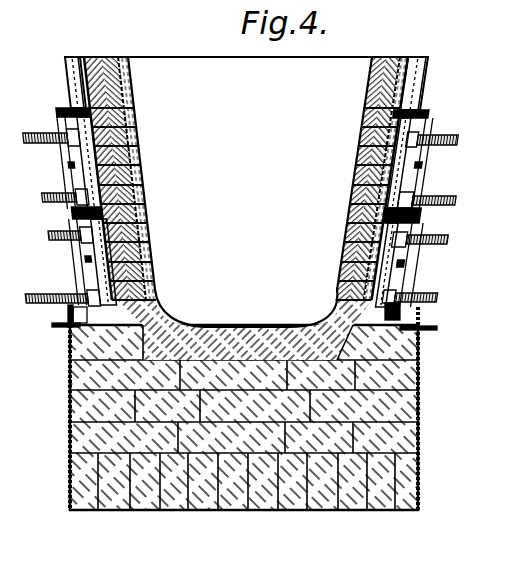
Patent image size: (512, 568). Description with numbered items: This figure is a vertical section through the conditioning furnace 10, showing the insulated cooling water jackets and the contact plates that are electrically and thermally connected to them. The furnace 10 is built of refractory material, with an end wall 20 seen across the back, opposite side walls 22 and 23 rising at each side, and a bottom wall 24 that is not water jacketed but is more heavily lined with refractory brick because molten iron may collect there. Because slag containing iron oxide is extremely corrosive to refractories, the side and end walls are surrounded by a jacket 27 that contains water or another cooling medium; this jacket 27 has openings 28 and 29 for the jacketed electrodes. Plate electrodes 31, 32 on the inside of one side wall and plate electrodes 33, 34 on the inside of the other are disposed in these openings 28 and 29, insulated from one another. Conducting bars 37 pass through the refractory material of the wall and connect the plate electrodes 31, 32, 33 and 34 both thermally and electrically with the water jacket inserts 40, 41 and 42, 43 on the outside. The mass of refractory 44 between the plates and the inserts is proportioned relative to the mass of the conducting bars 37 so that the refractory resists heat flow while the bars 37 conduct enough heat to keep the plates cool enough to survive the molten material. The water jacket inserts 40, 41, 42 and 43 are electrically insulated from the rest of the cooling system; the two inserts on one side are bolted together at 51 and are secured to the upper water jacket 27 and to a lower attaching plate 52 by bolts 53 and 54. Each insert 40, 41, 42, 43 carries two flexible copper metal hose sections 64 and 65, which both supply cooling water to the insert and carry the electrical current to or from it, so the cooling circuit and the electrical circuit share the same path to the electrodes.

The furnace 10 is at (442, 79).
The end wall 20 is at (188, 67).
The side wall 22 is at (375, 72).
The side wall 23 is at (122, 76).
The bottom wall 24 is at (209, 326).
The water jacket 27 is at (64, 60).
The opening 28 is at (70, 94).
The opening 29 is at (424, 112).
The plate electrode 31 is at (362, 148).
The plate electrode 32 is at (350, 250).
The plate electrode 33 is at (128, 112).
The plate electrode 34 is at (149, 229).
The conducting bar 37 is at (140, 148).
The water jacket insert 40 is at (428, 165).
The water jacket insert 41 is at (412, 257).
The water jacket insert 42 is at (58, 160).
The water jacket insert 43 is at (95, 250).
The refractory 44 is at (137, 189).
The bolt connection 51 is at (70, 211).
The lower attaching plate 52 is at (68, 335).
The bolt 53 is at (62, 112).
The bolt 54 is at (70, 311).
The flexible copper metal hose section 64 is at (27, 130).
The flexible copper metal hose section 65 is at (48, 199).